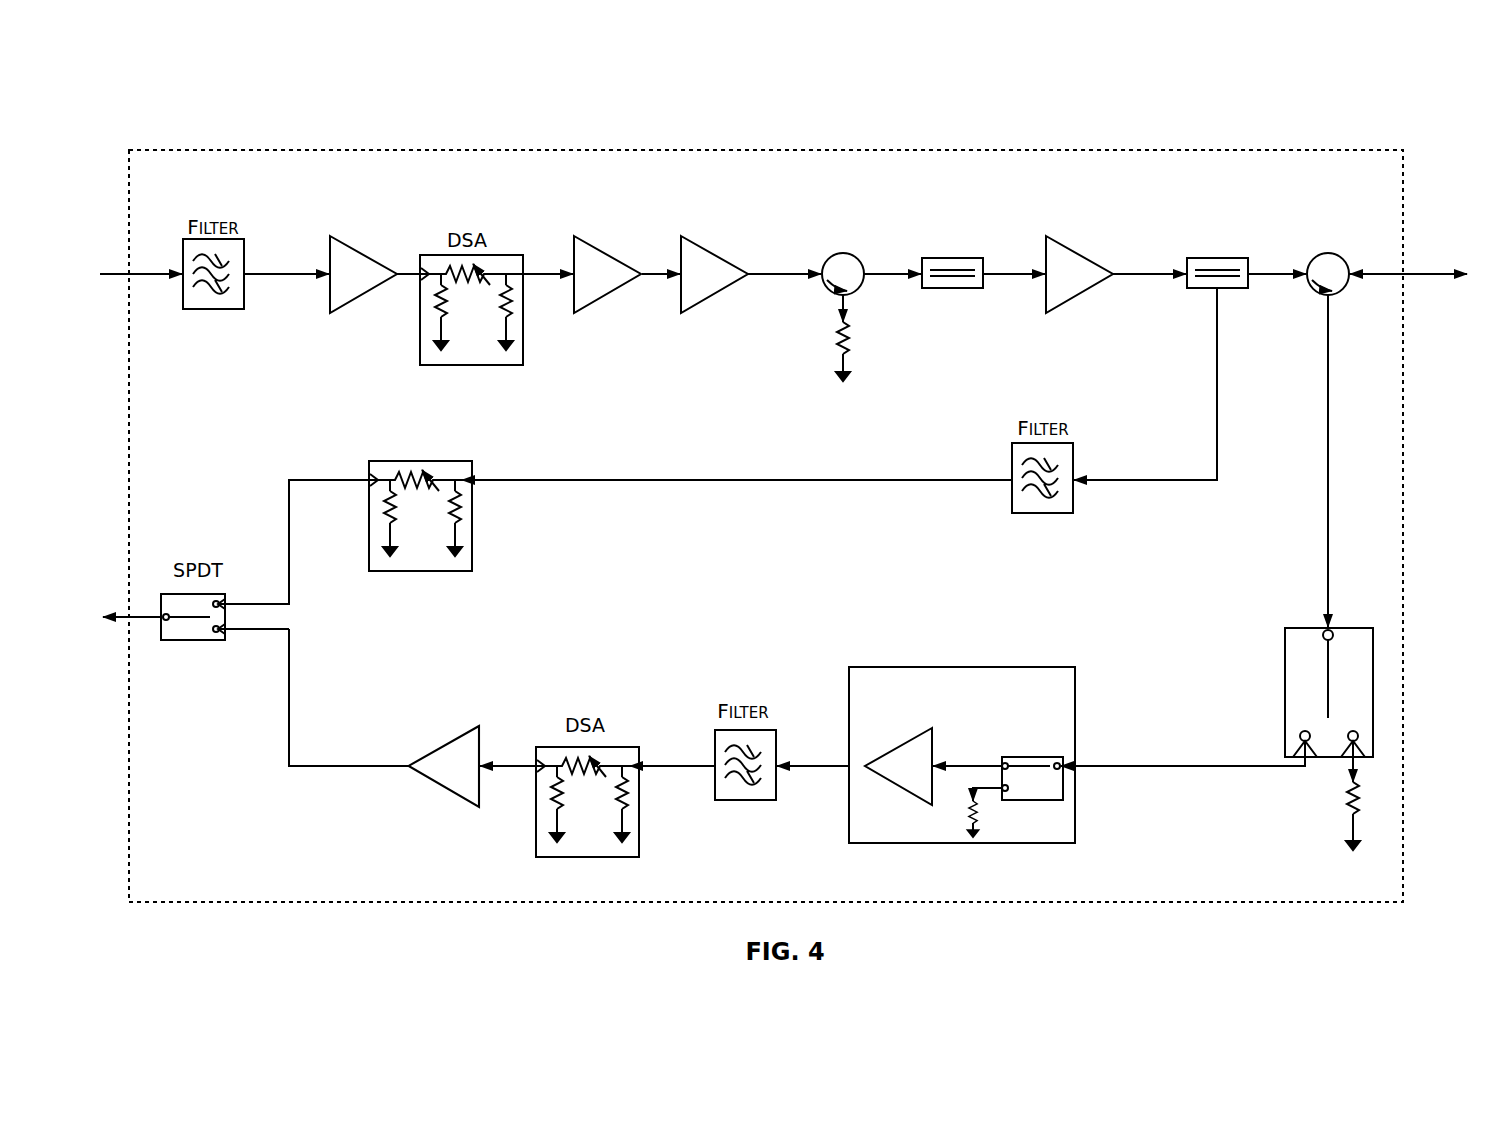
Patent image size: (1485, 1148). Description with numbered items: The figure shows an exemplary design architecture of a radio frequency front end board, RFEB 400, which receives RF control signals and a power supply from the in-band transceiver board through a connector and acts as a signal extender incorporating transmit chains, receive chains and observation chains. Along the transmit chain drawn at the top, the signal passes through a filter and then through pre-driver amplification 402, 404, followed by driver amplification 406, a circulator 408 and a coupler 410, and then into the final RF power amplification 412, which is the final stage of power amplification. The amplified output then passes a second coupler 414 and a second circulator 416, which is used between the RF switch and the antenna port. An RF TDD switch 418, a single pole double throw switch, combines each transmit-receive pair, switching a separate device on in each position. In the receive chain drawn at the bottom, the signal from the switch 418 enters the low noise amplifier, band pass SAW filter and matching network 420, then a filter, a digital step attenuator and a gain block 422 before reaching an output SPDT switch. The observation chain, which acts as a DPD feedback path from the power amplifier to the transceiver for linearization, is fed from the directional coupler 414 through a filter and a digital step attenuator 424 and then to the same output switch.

The radio frequency front end board (RFEB) 400 is at (237, 82).
The pre-driver amplification stage 402 is at (328, 264).
The pre-driver amplification stage 404 is at (610, 253).
The driver amplification stage 406 is at (725, 262).
The circulator 408 is at (848, 303).
The coupler 410 is at (968, 272).
The final RF power amplification stage 412 is at (1098, 260).
The coupler 414 is at (1172, 355).
The circulator 416 is at (1377, 426).
The RF TDD switch 418 is at (1217, 739).
The low noise amplifier band pass SAW filter and matching network 420 is at (962, 755).
The gain block 422 is at (396, 766).
The digital step attenuator (DSA) 424 is at (426, 495).